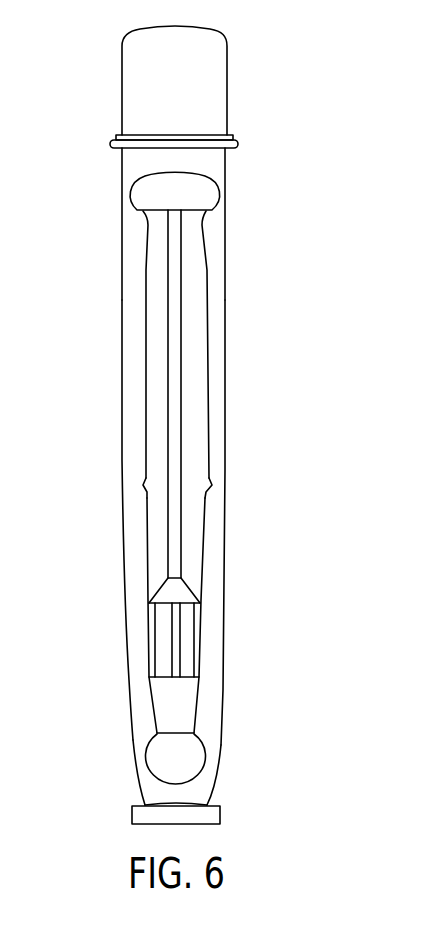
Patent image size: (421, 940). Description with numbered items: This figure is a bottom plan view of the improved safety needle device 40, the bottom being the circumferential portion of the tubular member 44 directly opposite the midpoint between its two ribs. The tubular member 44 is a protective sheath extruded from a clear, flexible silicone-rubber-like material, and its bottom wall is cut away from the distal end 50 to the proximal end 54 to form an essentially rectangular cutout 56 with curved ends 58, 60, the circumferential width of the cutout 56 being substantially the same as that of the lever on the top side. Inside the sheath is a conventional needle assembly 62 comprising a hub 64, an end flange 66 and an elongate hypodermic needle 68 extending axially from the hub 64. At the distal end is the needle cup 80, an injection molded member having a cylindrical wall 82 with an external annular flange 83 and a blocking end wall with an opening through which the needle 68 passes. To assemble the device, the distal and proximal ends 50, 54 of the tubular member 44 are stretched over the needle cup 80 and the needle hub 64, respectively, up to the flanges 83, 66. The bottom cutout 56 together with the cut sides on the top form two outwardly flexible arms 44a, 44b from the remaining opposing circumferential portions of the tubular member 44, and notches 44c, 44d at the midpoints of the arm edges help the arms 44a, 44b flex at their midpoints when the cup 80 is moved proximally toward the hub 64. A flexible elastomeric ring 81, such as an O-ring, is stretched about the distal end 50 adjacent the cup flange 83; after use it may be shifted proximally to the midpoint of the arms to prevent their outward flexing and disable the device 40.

The safety needle device 40 is at (81, 224).
The needle cup 80 is at (249, 60).
The cylindrical wall 82 is at (133, 80).
The external annular flange 83 is at (233, 138).
The flexible elastomeric ring 81 is at (112, 146).
The distal end 50 is at (218, 165).
The tubular member 44 is at (122, 567).
The flexible arm 44a is at (237, 433).
The flexible arm 44b is at (113, 387).
The notch 44c is at (212, 487).
The notch 44d is at (143, 487).
The proximal end 54 is at (202, 787).
The end flange 66 is at (220, 811).
The cutout 56 is at (194, 387).
The curved end 58 is at (213, 197).
The hypodermic needle 68 is at (176, 323).
The needle assembly 62 is at (194, 569).
The hub 64 is at (185, 697).
The curved end 60 is at (210, 752).